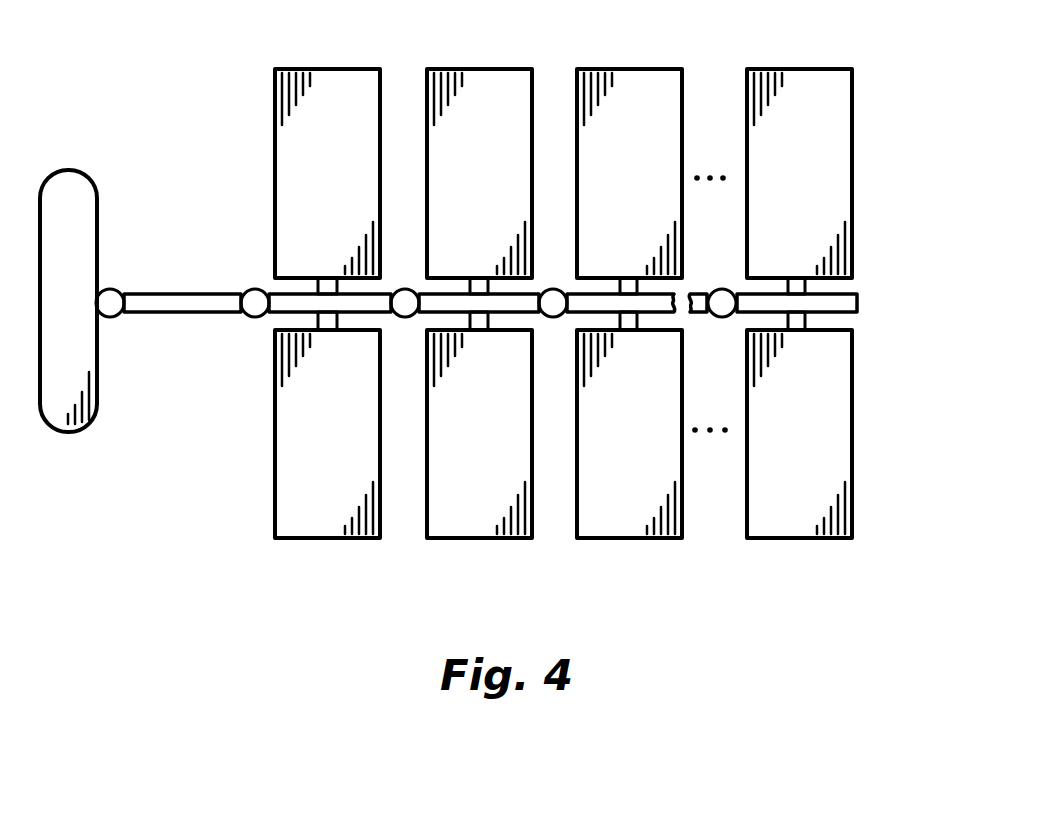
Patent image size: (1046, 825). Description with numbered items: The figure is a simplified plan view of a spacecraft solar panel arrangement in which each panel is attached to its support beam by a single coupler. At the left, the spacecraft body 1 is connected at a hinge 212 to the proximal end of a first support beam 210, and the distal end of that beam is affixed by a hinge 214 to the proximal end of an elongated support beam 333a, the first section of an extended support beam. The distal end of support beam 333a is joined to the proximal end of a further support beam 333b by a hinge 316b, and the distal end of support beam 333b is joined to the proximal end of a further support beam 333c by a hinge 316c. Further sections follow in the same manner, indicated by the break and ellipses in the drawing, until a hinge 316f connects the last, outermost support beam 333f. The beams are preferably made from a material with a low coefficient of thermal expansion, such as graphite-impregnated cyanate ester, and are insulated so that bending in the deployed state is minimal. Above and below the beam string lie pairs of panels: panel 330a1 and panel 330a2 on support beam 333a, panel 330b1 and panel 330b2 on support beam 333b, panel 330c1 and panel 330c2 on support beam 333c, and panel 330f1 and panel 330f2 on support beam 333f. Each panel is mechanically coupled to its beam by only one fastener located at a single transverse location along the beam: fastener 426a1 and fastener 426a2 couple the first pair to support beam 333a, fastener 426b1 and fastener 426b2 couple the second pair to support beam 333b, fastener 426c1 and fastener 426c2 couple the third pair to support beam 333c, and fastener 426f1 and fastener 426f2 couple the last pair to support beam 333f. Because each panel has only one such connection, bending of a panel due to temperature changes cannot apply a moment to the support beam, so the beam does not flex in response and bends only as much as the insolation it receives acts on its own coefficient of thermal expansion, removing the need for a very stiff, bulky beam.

The spacecraft body 1 is at (66, 171).
The first support beam 210 is at (170, 314).
The hinge 212 is at (119, 288).
The hinge 214 is at (244, 288).
The hinge 316b is at (403, 289).
The hinge 316c is at (552, 289).
The hinge 316f is at (720, 289).
The panel 330a1 is at (305, 68).
The panel 330b1 is at (457, 68).
The panel 330c1 is at (607, 68).
The panel 330f1 is at (777, 68).
The panel 330a2 is at (296, 540).
The panel 330b2 is at (447, 540).
The panel 330c2 is at (598, 540).
The panel 330f2 is at (759, 540).
The support beam 333a is at (274, 314).
The support beam 333b is at (425, 315).
The support beam 333c is at (576, 314).
The support beam 333f is at (857, 303).
The fastener 426a1 is at (318, 288).
The fastener 426b1 is at (470, 288).
The fastener 426c1 is at (620, 288).
The fastener 426f1 is at (788, 288).
The fastener 426a2 is at (338, 318).
The fastener 426b2 is at (490, 318).
The fastener 426c2 is at (639, 318).
The fastener 426f2 is at (804, 318).